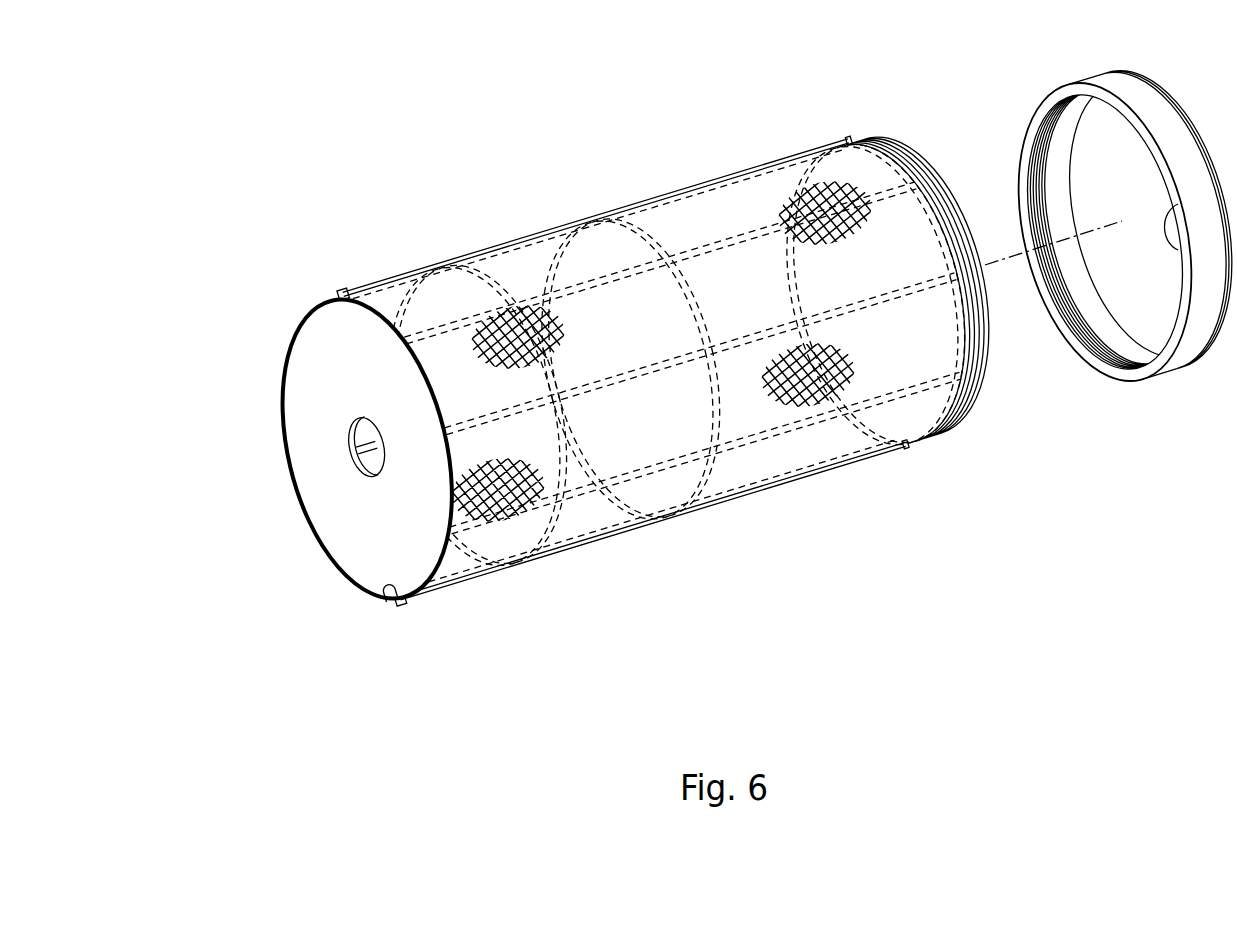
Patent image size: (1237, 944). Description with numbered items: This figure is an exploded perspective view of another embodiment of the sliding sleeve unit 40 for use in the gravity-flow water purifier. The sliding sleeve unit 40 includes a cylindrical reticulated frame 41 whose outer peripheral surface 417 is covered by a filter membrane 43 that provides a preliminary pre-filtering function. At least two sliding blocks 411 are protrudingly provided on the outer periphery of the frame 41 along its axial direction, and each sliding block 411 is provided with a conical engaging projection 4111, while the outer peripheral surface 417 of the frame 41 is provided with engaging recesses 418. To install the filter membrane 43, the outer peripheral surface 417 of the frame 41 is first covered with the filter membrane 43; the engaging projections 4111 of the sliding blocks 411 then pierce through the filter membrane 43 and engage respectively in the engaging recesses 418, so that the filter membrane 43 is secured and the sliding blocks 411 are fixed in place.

The sliding sleeve unit 40 is at (713, 359).
The cylindrical reticulated frame 41 is at (343, 473).
The sliding block 411 is at (623, 371).
The conical engaging projection 4111 is at (371, 447).
The outer peripheral surface 417 is at (293, 466).
The engaging recess 418 is at (387, 583).
The filter membrane 43 is at (310, 527).